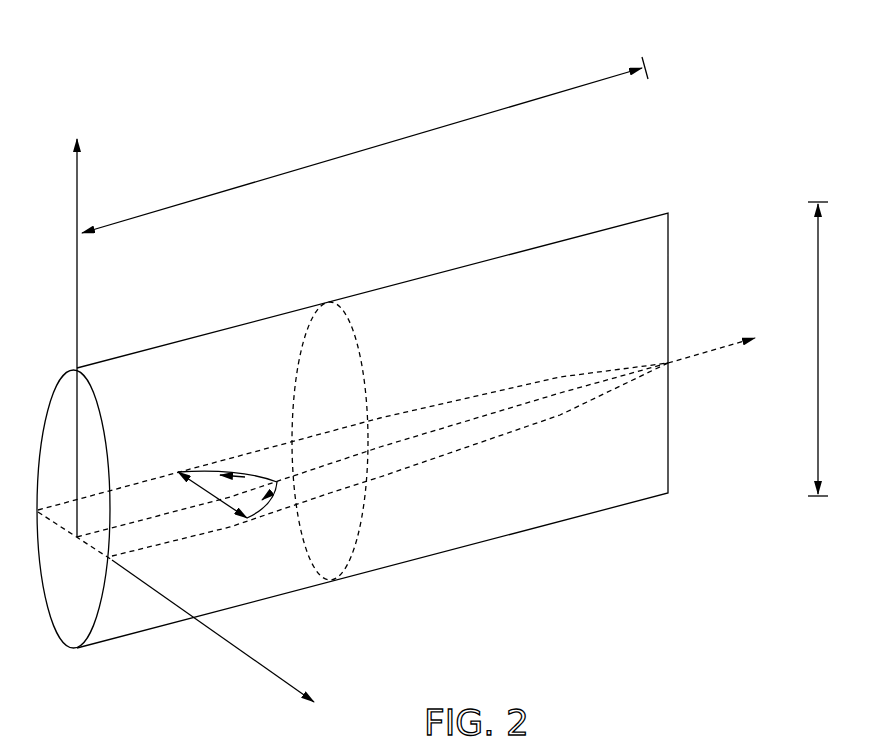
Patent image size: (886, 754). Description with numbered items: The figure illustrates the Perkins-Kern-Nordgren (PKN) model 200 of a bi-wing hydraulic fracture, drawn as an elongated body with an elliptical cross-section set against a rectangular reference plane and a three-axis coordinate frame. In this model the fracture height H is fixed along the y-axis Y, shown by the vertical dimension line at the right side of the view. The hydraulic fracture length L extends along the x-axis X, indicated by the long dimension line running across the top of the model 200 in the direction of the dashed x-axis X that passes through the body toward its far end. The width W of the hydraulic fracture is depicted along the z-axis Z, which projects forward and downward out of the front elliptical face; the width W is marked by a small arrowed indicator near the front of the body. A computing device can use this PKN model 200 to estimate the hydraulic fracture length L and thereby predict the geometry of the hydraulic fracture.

The PKN model 200 is at (510, 88).
The hydraulic fracture length L is at (392, 140).
The fracture height H is at (818, 270).
The width W is at (195, 502).
The x-axis X is at (717, 352).
The y-axis Y is at (77, 248).
The z-axis Z is at (282, 678).